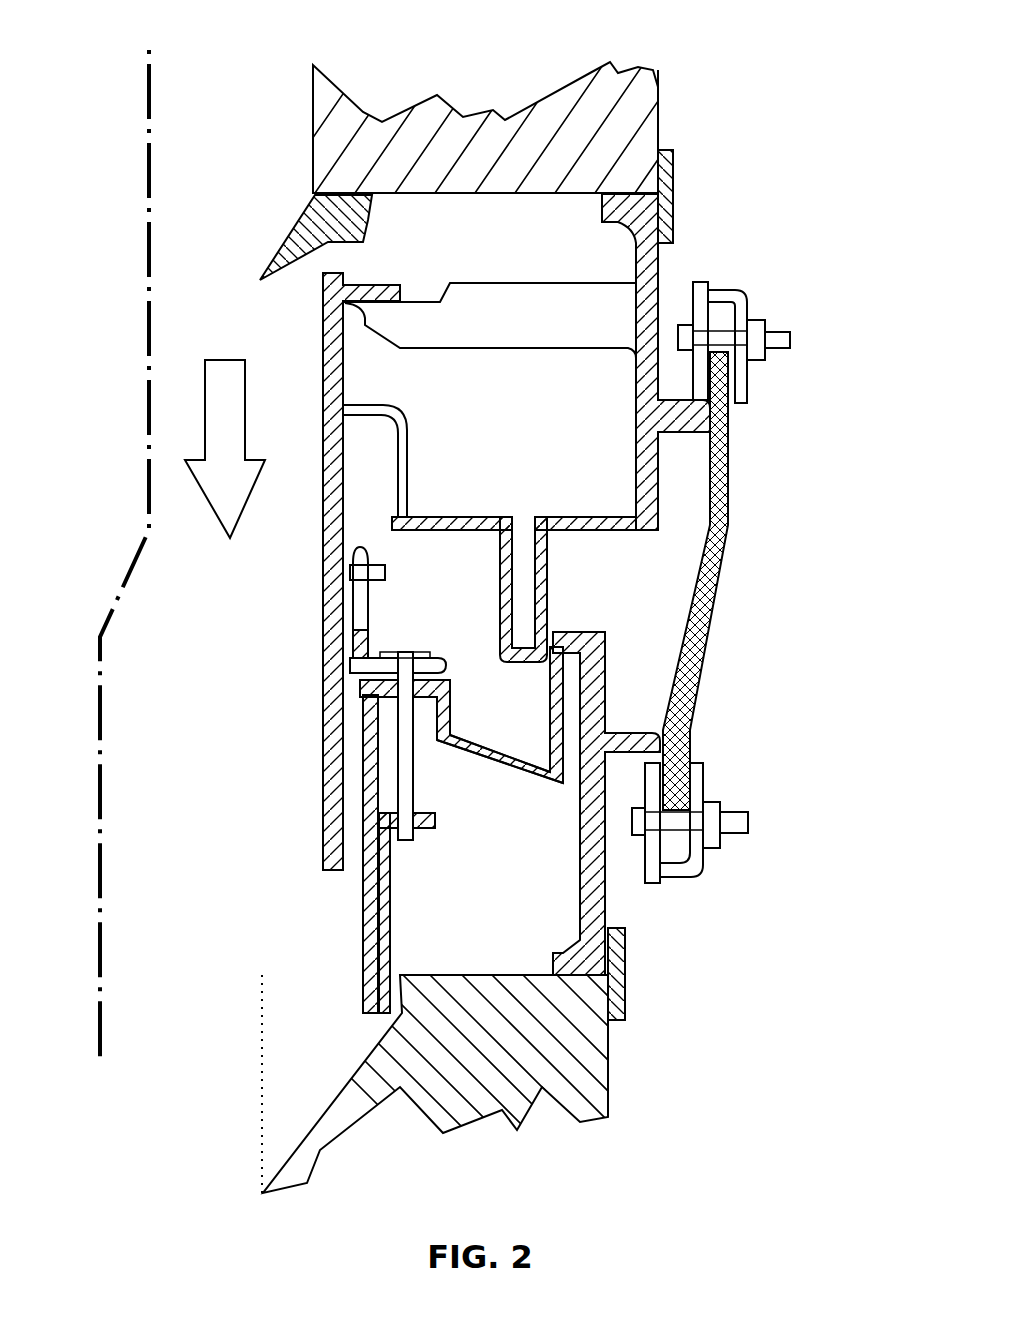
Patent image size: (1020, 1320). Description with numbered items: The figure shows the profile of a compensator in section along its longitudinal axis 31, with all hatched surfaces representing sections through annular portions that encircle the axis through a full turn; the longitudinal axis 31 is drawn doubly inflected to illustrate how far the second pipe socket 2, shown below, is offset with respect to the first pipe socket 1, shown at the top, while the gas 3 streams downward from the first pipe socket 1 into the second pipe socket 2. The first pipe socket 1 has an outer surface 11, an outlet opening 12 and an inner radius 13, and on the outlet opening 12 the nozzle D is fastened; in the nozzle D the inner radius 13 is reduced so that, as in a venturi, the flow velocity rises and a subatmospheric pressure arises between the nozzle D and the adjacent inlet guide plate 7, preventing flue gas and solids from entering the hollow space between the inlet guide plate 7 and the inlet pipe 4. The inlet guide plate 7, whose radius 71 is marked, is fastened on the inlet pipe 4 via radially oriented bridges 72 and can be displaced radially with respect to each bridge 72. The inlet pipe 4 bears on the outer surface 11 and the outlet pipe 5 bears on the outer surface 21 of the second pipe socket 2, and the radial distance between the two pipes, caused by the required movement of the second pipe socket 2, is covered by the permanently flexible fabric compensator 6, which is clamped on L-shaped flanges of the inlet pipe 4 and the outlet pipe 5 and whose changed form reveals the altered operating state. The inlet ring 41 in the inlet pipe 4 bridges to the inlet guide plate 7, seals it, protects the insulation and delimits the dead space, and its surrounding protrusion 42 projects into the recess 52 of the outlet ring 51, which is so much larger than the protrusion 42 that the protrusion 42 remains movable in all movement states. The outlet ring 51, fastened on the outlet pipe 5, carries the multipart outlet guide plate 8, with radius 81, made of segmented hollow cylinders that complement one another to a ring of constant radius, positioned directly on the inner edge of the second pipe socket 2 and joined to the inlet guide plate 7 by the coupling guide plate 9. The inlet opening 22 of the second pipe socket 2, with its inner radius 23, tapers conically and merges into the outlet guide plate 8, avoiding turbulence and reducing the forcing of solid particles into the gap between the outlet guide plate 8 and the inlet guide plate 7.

The first pipe socket 1 is at (433, 127).
The outer surface of the first pipe socket 11 is at (666, 117).
The outlet opening of the first pipe socket 12 is at (200, 212).
The inner radius of the first pipe socket 13 is at (312, 98).
The second pipe socket 2 is at (483, 1105).
The outer surface of the second pipe socket 21 is at (618, 1072).
The inlet opening of the second pipe socket 22 is at (170, 968).
The inner radius of the second pipe socket 23 is at (100, 1003).
The gas 3 is at (225, 449).
The longitudinal axis 31 is at (122, 560).
The inlet pipe 4 is at (650, 292).
The inlet ring 41 is at (600, 518).
The protrusion 42 is at (500, 585).
The outlet pipe 5 is at (598, 686).
The outlet ring 51 is at (563, 633).
The recess 52 is at (493, 757).
The fabric compensator 6 is at (697, 648).
The inlet guide plate 7 is at (326, 577).
The radius of the inlet guide plate 71 is at (322, 328).
The bridge 72 is at (505, 317).
The outlet guide plate 8 is at (372, 748).
The radius of the outlet guide plate 81 is at (100, 910).
The coupling guide plate 9 is at (348, 665).
The nozzle D is at (350, 228).